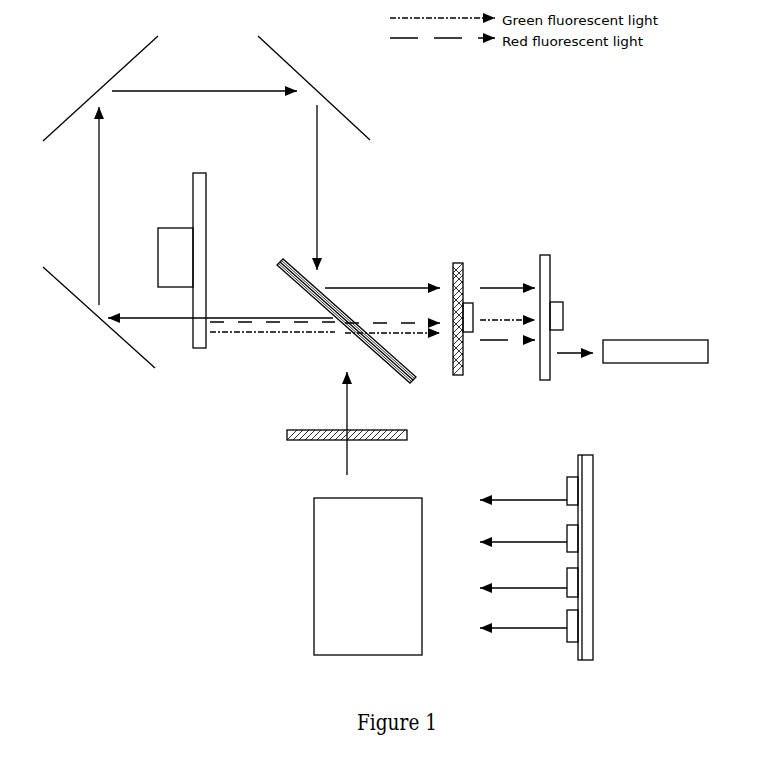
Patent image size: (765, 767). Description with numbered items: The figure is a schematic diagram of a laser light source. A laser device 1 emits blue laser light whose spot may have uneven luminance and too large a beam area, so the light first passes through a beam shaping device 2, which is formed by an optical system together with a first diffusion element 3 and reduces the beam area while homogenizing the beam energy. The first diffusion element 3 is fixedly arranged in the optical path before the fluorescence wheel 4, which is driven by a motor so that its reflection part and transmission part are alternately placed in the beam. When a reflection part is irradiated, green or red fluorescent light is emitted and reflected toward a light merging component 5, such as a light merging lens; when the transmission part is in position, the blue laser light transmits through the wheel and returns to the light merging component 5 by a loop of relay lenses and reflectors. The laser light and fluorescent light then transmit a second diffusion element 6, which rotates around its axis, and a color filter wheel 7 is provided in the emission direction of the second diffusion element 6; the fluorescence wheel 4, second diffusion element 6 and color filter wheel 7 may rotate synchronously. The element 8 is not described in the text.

The laser device 1 is at (608, 522).
The beam shaping device 2 is at (415, 485).
The first diffusion element 3 is at (398, 425).
The fluorescence wheel 4 is at (197, 353).
The light merging component 5 is at (343, 250).
The second diffusion element 6 is at (455, 257).
The color filter wheel 7 is at (562, 283).
The light rod 8 is at (668, 333).